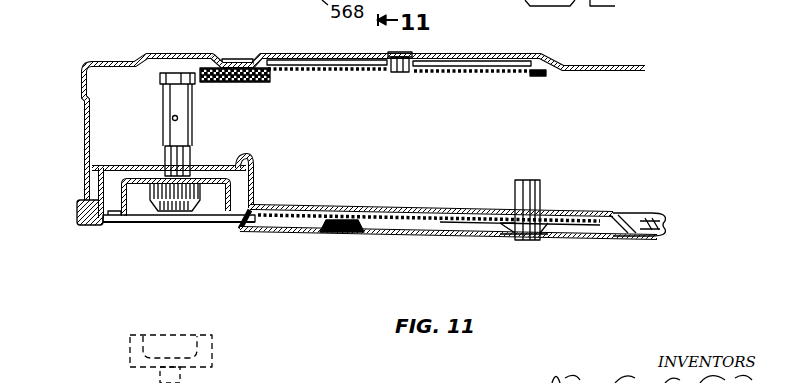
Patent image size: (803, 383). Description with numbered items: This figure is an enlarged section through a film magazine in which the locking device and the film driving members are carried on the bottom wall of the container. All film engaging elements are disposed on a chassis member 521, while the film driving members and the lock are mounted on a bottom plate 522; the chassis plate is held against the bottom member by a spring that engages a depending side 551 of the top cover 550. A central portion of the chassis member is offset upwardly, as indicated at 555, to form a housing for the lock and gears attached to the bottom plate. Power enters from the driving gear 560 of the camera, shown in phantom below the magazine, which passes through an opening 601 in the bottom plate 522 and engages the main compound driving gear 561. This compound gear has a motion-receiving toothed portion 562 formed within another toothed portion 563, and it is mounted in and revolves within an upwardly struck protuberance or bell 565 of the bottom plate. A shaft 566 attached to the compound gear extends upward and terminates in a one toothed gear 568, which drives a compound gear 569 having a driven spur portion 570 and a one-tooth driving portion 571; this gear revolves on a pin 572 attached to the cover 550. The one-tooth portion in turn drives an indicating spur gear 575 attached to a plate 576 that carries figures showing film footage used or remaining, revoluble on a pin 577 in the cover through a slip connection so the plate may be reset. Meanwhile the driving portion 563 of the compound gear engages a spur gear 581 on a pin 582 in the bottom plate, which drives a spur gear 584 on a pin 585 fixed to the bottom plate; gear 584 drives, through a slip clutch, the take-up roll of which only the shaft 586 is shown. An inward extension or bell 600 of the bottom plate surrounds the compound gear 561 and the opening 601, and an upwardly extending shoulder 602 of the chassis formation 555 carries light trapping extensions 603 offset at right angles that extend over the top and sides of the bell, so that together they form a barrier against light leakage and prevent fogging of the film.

The top cover 550 is at (120, 58).
The depending side 551 is at (82, 85).
The one toothed gear 568 is at (178, 73).
The driving portion 571 is at (226, 62).
The pin 572 is at (238, 59).
The driven portion 570 is at (232, 82).
The compound gear 569 is at (282, 88).
The pin 577 is at (407, 58).
The plate 576 is at (513, 61).
The indicating spur gear 575 is at (487, 74).
The shaft 566 is at (165, 152).
The bell 565 is at (229, 165).
The bell 600 is at (95, 170).
The light trapping extensions 603 is at (255, 154).
The shoulder 602 is at (253, 194).
The offset central portion 555 is at (421, 206).
The shaft 586 is at (540, 186).
The chassis member 521 is at (648, 222).
The bottom plate 522 is at (633, 238).
The toothed portion 563 is at (111, 213).
The motion-receiving toothed portion 562 is at (163, 210).
The opening 601 is at (170, 238).
The main compound driving gear 561 is at (214, 218).
The pin 582 is at (348, 234).
The spur gear 581 is at (420, 222).
The spur gear 584 is at (485, 224).
The pin 585 is at (528, 234).
The driving gear 560 is at (160, 338).